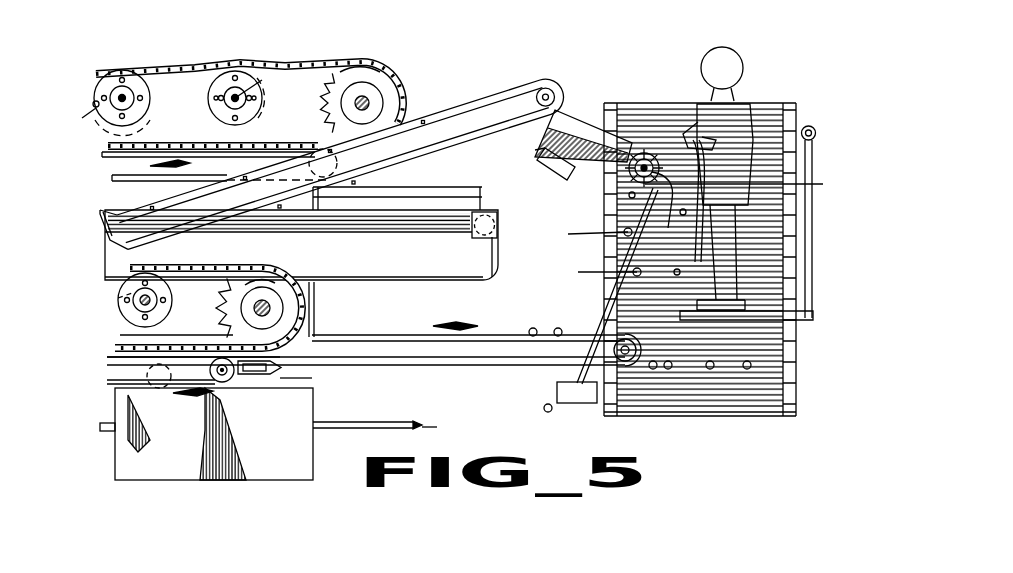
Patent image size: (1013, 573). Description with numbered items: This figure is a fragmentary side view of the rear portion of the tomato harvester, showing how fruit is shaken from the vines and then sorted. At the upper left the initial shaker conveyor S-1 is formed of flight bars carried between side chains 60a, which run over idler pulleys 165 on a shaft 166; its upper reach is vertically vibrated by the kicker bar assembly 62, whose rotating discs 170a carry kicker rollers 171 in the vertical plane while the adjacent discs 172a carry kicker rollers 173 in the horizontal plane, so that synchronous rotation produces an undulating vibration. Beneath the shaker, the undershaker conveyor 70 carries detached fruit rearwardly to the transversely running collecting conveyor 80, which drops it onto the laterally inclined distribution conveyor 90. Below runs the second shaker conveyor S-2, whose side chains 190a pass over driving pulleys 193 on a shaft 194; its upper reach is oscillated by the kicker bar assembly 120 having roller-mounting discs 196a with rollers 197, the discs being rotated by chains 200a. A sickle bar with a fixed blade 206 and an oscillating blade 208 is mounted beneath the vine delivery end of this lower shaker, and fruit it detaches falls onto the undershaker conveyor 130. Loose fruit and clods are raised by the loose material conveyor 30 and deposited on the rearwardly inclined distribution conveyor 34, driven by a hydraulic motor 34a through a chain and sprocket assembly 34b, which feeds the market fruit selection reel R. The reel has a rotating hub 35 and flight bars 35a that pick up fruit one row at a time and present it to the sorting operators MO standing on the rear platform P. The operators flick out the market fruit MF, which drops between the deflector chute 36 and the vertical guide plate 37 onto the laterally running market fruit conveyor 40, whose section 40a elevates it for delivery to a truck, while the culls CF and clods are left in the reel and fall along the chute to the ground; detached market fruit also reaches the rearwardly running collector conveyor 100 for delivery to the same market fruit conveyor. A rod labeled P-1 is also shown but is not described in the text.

The loose material conveyor 30 is at (519, 87).
The distribution conveyor 34 is at (583, 113).
The hydraulic motor 34a is at (566, 178).
The chain and sprocket assembly 34b is at (535, 150).
The rotating hub 35 is at (634, 156).
The flight bars 35a is at (628, 196).
The deflector chute 36 is at (594, 323).
The vertical guide plate 37 is at (752, 185).
The market fruit conveyor 40 is at (803, 362).
The elevating section of market fruit conveyor 40a is at (796, 105).
The side chains 60a is at (188, 67).
The kicker bar assembly 62 is at (254, 78).
The undershaker conveyor 70 is at (158, 184).
The collecting conveyor 80 is at (423, 186).
The distribution conveyor 90 is at (460, 267).
The collector conveyor 100 is at (503, 366).
The kicker bar assembly 120 is at (200, 282).
The undershaker conveyor 130 is at (233, 383).
The idler pulleys 165 is at (360, 66).
The shaft 166 is at (370, 104).
The rotating discs 170a is at (246, 70).
The kicker rollers 171 is at (260, 98).
The rotating discs 172a is at (134, 76).
The kicker rollers 173 is at (137, 101).
The side chains 190a is at (280, 263).
The driving pulleys 193 is at (309, 316).
The shaft 194 is at (270, 297).
The roller-mounting discs 196a is at (165, 285).
The rollers 197 is at (117, 298).
The chains 200a is at (128, 404).
The fixed blade 206 is at (306, 371).
The oscillating blade 208 is at (256, 376).
The culls CF is at (575, 421).
The market fruit MF is at (747, 373).
The sorting operators MO is at (738, 47).
The rear platform P is at (808, 311).
The piston rod P-1 is at (395, 428).
The market fruit selection reel R is at (660, 160).
The shaker conveyor S-1 is at (397, 66).
The shaker conveyor S-2 is at (309, 296).